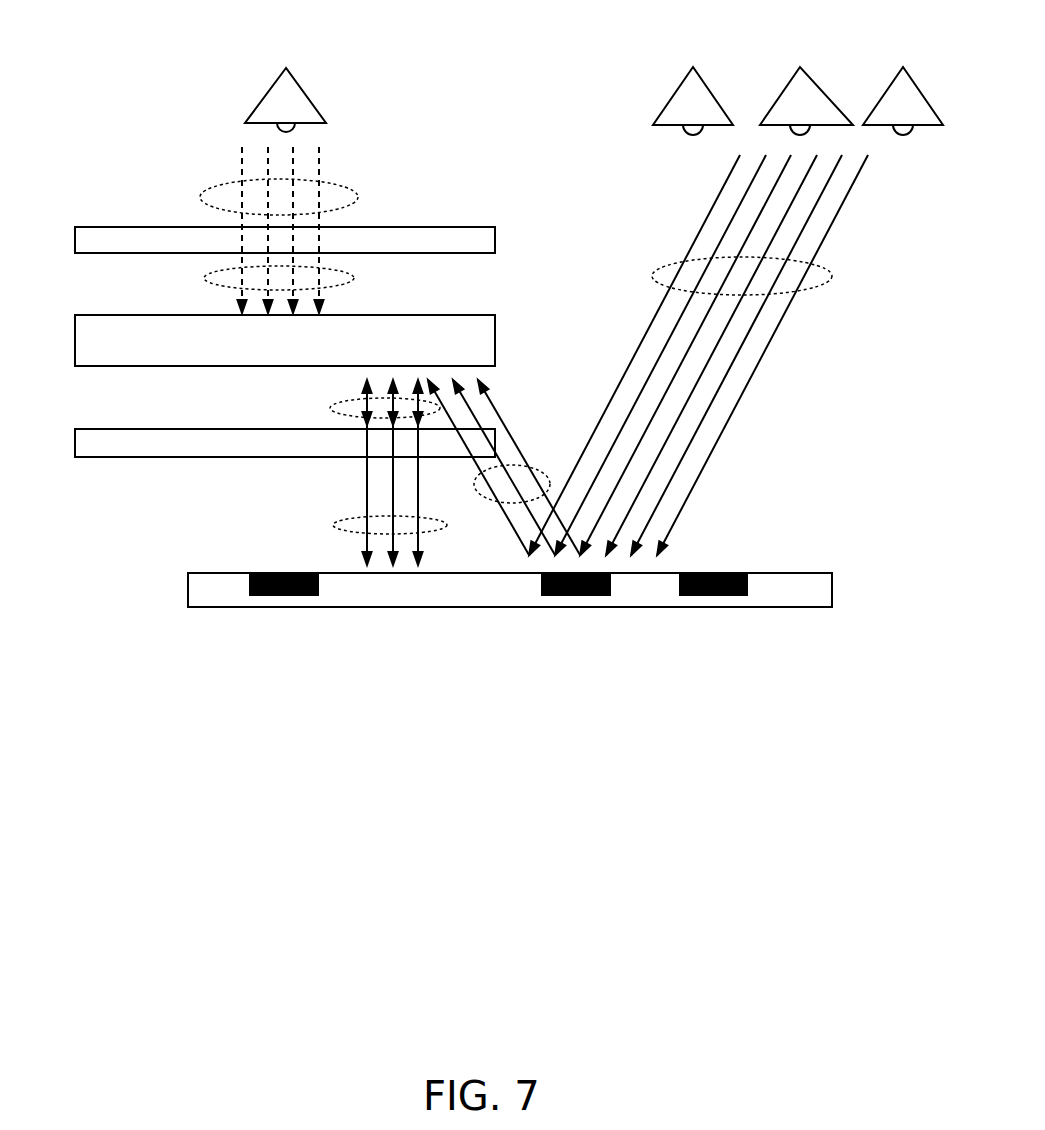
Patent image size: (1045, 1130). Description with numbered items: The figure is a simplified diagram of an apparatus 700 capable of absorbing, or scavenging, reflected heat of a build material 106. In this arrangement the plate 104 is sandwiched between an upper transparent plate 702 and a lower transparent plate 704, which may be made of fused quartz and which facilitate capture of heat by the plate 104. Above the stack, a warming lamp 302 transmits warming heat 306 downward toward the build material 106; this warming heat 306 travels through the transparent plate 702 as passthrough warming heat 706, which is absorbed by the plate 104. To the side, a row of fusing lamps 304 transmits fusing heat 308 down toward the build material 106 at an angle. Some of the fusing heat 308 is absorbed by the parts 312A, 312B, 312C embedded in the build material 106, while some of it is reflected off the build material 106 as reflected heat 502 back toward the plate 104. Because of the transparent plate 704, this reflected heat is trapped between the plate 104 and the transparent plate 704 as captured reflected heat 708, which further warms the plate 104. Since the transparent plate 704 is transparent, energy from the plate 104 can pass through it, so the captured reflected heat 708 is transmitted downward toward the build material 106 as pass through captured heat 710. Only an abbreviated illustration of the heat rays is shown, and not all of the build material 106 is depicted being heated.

The apparatus 700 is at (488, 535).
The warming lamp 302 is at (297, 83).
The fusing lamps 304 is at (923, 92).
The warming heat 306 is at (220, 183).
The fusing heat 308 is at (822, 266).
The transparent plate 702 is at (128, 227).
The passthrough warming heat 706 is at (204, 276).
The plate 104 is at (108, 367).
The transparent plate 704 is at (108, 458).
The captured reflected heat 708 is at (337, 412).
The pass through captured heat 710 is at (338, 525).
The reflected heat 502 is at (538, 468).
The build material 106 is at (832, 590).
The part 312A is at (285, 646).
The part 312B is at (581, 646).
The part 312C is at (718, 646).